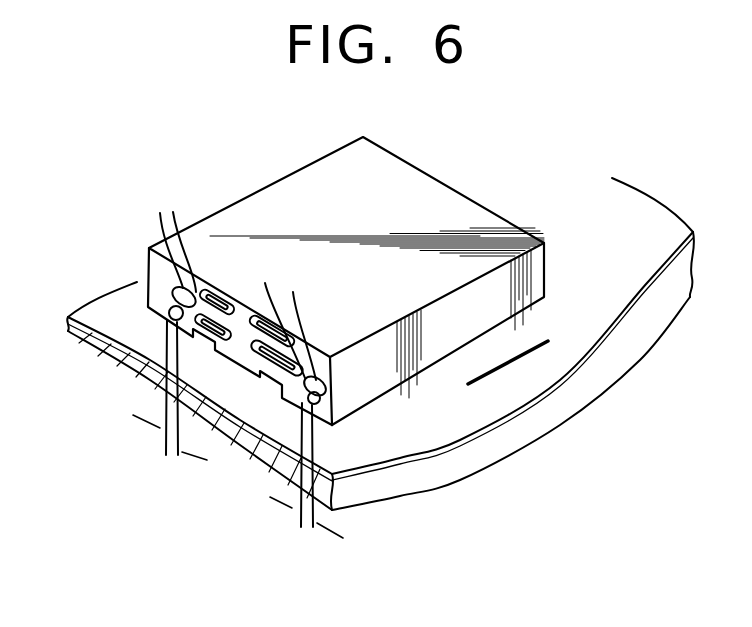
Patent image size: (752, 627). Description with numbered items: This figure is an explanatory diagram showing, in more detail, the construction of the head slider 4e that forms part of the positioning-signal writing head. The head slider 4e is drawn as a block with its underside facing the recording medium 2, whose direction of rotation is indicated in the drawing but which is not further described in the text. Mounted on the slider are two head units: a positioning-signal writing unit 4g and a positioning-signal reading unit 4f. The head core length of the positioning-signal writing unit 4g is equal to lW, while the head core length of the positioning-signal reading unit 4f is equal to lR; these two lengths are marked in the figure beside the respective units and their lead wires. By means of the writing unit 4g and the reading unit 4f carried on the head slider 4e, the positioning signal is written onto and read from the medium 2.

The magnetic disk 2 is at (558, 417).
The head slider 4e is at (284, 190).
The positioning-signal reading unit 4f is at (138, 282).
The positioning-signal writing unit 4g is at (345, 402).
The head core length of the positioning-signal reading unit lR is at (170, 405).
The head core length of the positioning-signal writing unit lW is at (306, 487).